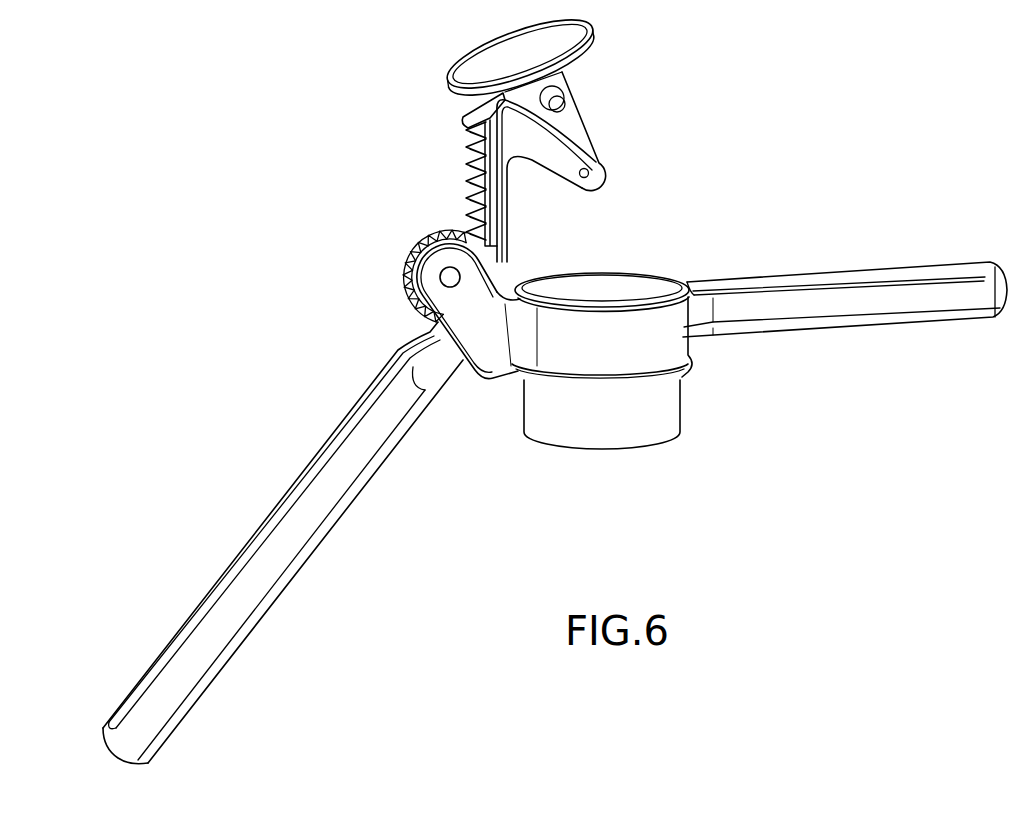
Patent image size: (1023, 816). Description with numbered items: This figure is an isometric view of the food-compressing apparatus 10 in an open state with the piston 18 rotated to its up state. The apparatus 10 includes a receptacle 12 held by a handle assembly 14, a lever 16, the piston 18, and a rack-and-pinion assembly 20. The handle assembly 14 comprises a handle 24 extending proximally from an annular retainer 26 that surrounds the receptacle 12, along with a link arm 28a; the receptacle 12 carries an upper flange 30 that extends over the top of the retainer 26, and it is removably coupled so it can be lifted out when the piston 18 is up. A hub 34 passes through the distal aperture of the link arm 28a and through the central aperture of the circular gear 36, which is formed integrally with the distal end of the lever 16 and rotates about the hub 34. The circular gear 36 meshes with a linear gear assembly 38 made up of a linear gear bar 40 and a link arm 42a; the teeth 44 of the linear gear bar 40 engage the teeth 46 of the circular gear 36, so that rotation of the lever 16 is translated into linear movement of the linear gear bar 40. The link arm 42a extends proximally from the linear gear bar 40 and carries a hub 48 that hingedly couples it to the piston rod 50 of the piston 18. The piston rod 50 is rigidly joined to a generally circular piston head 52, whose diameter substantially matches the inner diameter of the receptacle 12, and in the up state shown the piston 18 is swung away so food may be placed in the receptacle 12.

The apparatus 10 is at (707, 89).
The receptacle 12 is at (608, 420).
The handle assembly 14 is at (717, 251).
The lever 16 is at (324, 522).
The piston 18 is at (598, 40).
The rack-and-pinion assembly 20 is at (404, 199).
The handle 24 is at (830, 314).
The retainer 26 is at (608, 355).
The link arm 28a is at (487, 329).
The upper flange 30 is at (654, 274).
The hub 34 is at (440, 277).
The circular gear 36 is at (418, 240).
The linear gear assembly 38 is at (468, 113).
The linear gear bar 40 is at (466, 175).
The link arm 42a is at (549, 158).
The teeth 44 is at (465, 140).
The teeth 46 is at (408, 299).
The hub 48 is at (594, 172).
The piston rod 50 is at (574, 117).
The piston head 52 is at (527, 62).